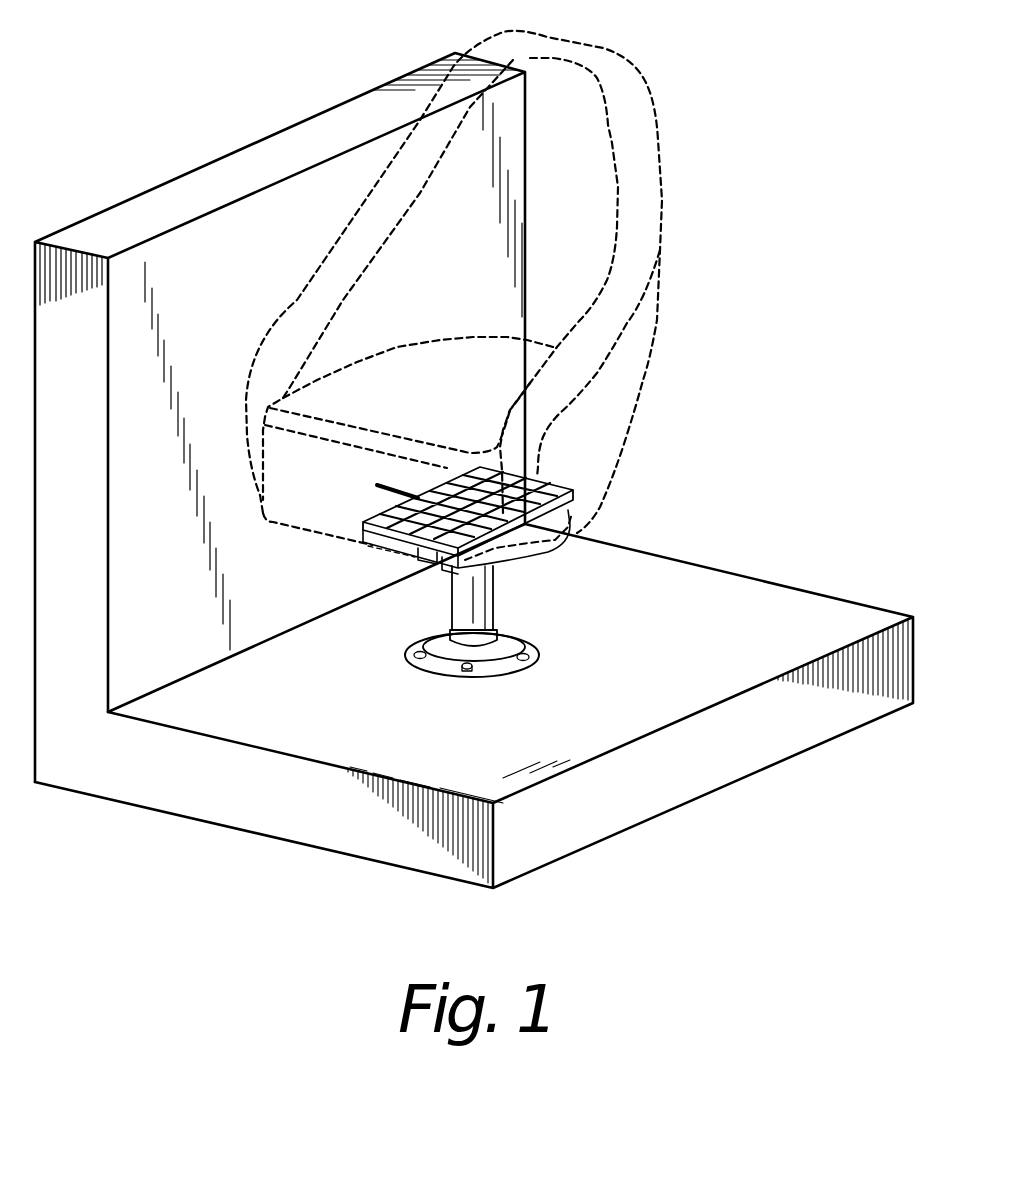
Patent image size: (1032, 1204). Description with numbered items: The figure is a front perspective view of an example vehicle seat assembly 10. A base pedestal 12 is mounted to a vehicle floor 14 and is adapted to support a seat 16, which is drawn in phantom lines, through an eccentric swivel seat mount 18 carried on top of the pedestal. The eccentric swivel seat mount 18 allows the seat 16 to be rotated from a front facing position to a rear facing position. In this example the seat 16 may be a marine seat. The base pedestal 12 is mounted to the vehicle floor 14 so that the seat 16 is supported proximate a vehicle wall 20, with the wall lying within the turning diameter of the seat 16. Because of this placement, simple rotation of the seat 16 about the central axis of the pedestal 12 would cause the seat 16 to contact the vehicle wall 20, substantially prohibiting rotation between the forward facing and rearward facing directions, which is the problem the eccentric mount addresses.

The vehicle seat assembly 10 is at (767, 268).
The base pedestal 12 is at (487, 595).
The vehicle floor 14 is at (788, 613).
The seat 16 is at (640, 98).
The eccentric swivel seat mount 18 is at (360, 564).
The vehicle wall 20 is at (207, 247).